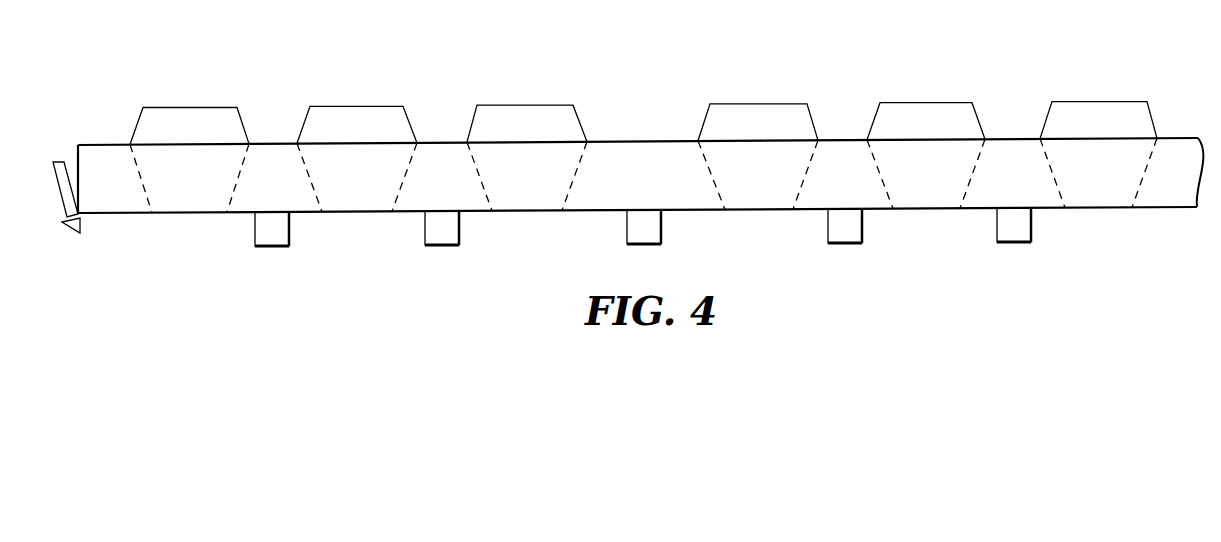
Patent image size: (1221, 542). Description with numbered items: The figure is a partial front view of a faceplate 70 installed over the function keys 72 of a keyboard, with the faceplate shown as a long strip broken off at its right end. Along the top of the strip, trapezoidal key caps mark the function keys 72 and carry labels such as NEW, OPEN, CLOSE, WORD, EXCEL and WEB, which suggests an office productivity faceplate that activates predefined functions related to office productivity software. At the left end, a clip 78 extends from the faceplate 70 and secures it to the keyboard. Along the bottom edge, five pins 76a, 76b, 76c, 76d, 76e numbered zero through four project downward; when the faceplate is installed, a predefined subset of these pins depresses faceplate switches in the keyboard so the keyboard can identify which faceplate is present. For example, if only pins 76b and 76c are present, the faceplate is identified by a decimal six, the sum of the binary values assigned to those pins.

The faceplate 70 is at (283, 145).
The function keys 72 is at (1127, 102).
The pin 76a is at (252, 232).
The pin 76b is at (422, 231).
The pin 76c is at (624, 230).
The pin 76d is at (825, 229).
The pin 76e is at (994, 228).
The clip 78 is at (63, 162).